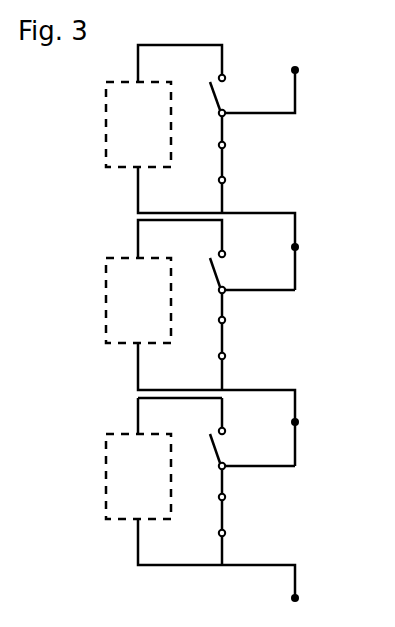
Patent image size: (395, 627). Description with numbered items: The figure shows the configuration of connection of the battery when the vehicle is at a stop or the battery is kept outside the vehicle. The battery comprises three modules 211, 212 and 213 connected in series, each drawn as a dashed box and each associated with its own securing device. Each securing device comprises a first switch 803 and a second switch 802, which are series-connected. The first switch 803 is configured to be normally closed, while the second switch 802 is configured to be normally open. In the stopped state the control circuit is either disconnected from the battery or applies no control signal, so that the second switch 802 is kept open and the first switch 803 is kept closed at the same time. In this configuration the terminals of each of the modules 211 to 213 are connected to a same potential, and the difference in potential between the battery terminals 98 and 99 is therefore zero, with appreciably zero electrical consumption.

The module 211 is at (106, 124).
The module 212 is at (106, 299).
The module 213 is at (106, 476).
The second switch 802 is at (227, 96).
The first switch 803 is at (225, 176).
The terminal 98 is at (299, 68).
The terminal 99 is at (299, 598).